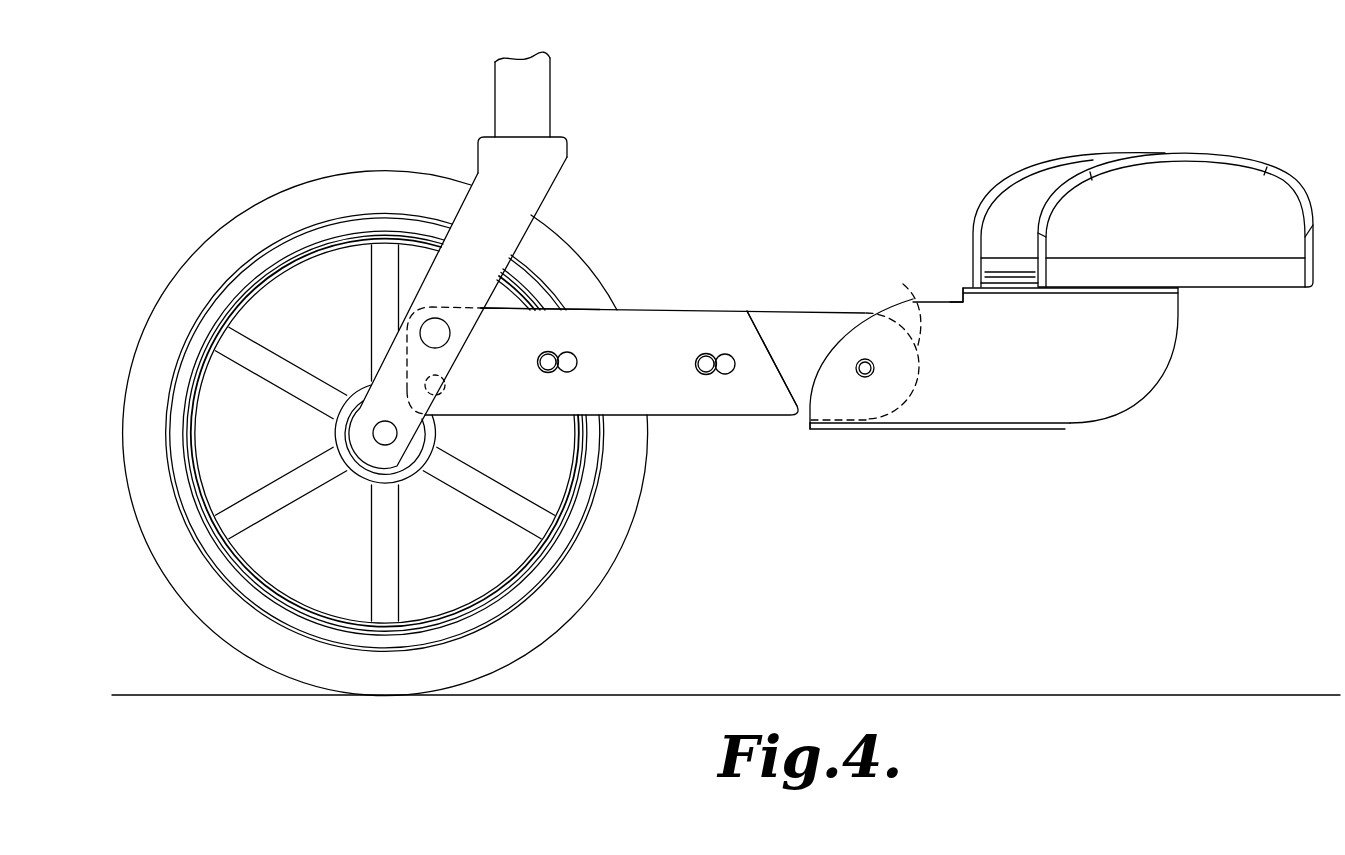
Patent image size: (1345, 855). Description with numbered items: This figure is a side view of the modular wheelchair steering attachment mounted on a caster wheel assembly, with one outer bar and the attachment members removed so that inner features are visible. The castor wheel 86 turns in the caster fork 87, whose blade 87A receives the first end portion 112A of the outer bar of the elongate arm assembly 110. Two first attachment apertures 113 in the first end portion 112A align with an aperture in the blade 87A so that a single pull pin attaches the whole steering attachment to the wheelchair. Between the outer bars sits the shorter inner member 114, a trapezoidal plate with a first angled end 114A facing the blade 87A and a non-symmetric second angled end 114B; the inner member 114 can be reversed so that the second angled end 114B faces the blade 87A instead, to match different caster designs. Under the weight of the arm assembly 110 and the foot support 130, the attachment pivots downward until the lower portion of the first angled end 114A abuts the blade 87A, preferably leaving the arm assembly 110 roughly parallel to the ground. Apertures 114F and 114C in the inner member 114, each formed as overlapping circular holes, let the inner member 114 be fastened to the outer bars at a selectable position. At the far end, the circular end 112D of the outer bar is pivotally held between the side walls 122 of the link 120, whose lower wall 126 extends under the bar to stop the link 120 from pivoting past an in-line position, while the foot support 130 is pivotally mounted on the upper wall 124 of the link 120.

The castor wheel 86 is at (365, 172).
The caster fork 87 is at (494, 260).
The blade 87A is at (545, 171).
The arm assembly 110 is at (995, 358).
The first end portion 112A is at (496, 305).
The ends of the outer bars 112D is at (878, 339).
The first attachment apertures 113 is at (415, 318).
The inner member 114 is at (645, 387).
The first angled end 114A is at (497, 347).
The second angled end 114B is at (778, 343).
The arm fastener holes 114C is at (727, 374).
The apertures 114F is at (576, 369).
The link 120 is at (1113, 415).
The side walls 122 is at (917, 398).
The upper wall 124 is at (973, 287).
The lower wall 126 is at (987, 428).
The foot support 130 is at (1257, 165).